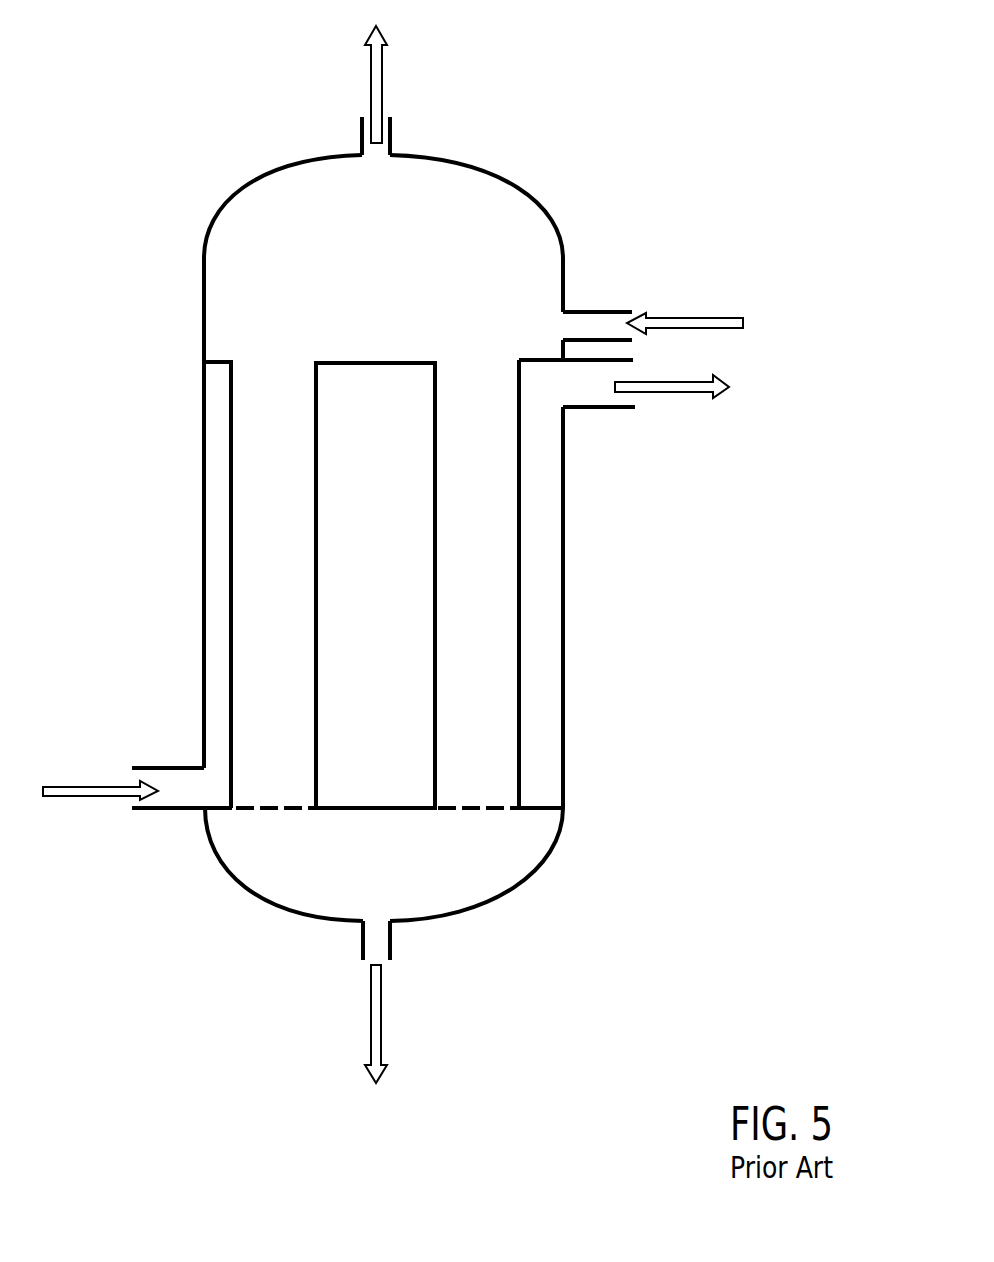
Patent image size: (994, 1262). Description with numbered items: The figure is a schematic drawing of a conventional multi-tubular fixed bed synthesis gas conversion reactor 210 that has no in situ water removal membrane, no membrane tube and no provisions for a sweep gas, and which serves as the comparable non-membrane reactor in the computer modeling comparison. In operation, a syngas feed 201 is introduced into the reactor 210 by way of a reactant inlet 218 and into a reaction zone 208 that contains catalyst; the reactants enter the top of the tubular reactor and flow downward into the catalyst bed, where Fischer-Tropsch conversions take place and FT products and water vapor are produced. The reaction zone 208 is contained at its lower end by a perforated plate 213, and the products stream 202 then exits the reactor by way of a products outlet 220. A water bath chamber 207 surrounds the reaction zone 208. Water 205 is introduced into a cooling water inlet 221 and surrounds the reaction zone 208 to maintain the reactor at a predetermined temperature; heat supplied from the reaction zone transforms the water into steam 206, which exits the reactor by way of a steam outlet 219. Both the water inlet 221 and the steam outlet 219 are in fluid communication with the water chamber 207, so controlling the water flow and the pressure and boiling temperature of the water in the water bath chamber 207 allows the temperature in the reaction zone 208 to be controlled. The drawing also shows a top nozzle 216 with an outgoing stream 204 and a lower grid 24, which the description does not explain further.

The reactor 210 is at (608, 73).
The top outlet nozzle 216 is at (362, 135).
The overhead product stream 204 is at (378, 75).
The reactant inlet 218 is at (612, 308).
The syngas feed 201 is at (718, 317).
The steam 206 is at (708, 352).
The steam outlet 219 is at (615, 410).
The water bath chamber 207 is at (207, 465).
The reaction zone 208 is at (257, 655).
The water 205 is at (75, 785).
The cooling water inlet 221 is at (145, 812).
The distributor plate 24 is at (275, 795).
The perforated plate 213 is at (493, 810).
The products outlet 220 is at (392, 943).
The products stream 202 is at (372, 993).